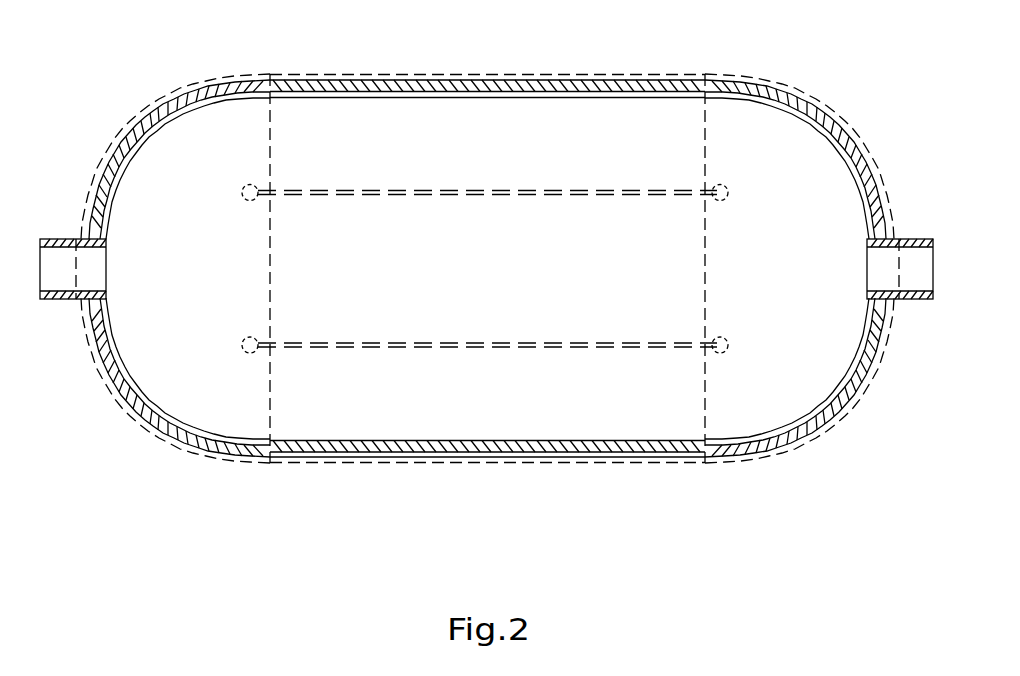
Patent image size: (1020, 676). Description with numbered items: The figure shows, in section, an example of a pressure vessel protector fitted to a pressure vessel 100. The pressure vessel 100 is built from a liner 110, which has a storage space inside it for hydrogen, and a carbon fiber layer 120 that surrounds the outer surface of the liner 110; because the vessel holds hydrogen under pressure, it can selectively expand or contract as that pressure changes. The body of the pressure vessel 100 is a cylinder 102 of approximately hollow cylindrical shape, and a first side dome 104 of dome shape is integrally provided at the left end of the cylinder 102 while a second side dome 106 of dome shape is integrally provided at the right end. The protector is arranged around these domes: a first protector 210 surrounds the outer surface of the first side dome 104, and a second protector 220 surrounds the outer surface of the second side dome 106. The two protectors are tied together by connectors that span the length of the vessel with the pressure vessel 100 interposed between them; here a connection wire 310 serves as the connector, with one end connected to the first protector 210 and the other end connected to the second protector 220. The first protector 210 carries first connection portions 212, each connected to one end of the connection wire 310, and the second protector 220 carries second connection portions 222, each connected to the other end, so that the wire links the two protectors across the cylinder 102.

The pressure vessel 100 is at (389, 459).
The cylinder 102 is at (448, 463).
The first side dome 104 is at (206, 454).
The second side dome 106 is at (766, 450).
The liner 110 is at (578, 446).
The carbon fiber layer 120 is at (639, 456).
The first protector 210 is at (203, 80).
The first connection portion 212 is at (250, 183).
The second protector 220 is at (770, 82).
The second connection portion 222 is at (720, 184).
The connection wire 310 is at (563, 342).